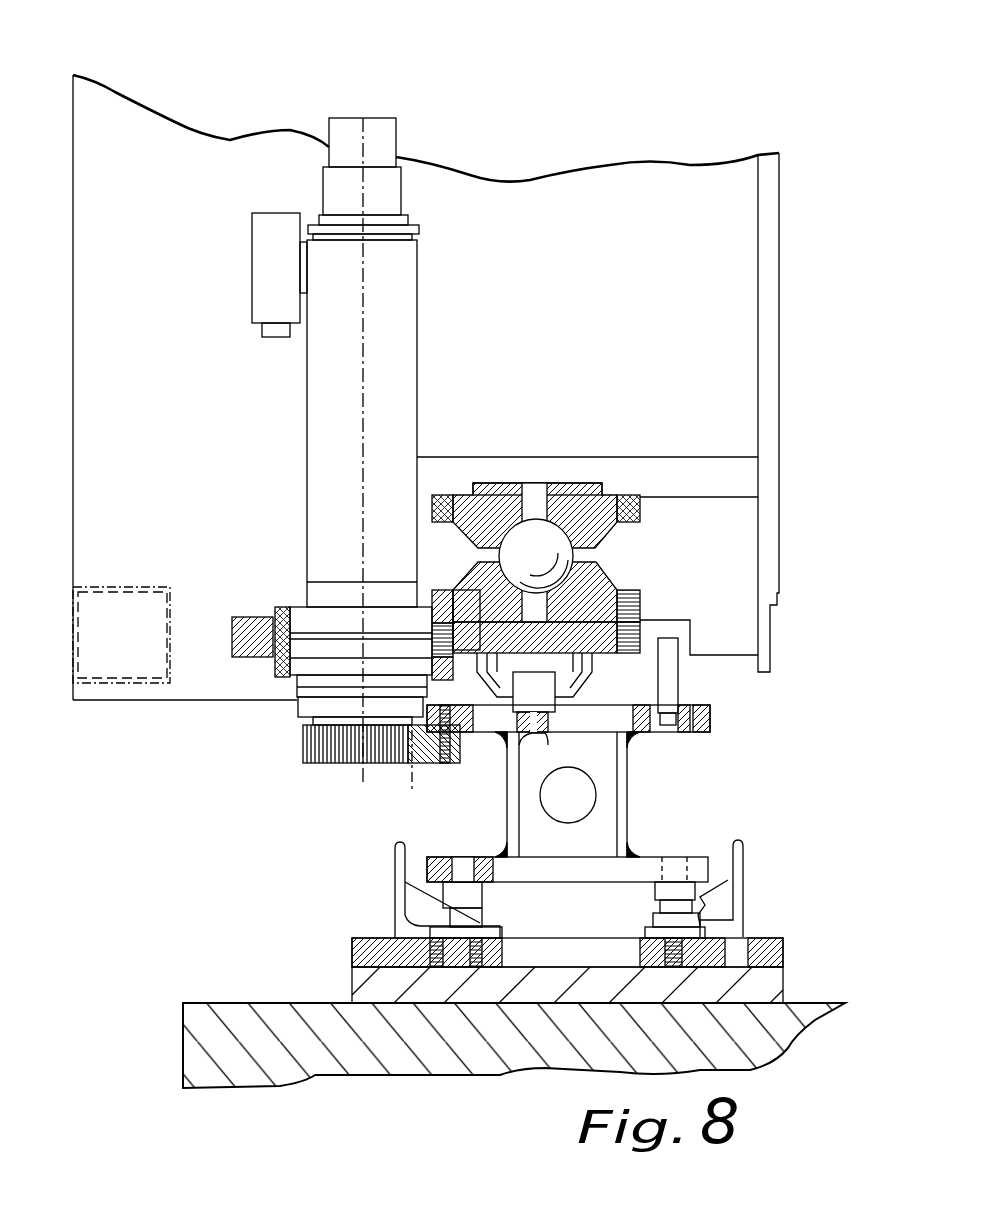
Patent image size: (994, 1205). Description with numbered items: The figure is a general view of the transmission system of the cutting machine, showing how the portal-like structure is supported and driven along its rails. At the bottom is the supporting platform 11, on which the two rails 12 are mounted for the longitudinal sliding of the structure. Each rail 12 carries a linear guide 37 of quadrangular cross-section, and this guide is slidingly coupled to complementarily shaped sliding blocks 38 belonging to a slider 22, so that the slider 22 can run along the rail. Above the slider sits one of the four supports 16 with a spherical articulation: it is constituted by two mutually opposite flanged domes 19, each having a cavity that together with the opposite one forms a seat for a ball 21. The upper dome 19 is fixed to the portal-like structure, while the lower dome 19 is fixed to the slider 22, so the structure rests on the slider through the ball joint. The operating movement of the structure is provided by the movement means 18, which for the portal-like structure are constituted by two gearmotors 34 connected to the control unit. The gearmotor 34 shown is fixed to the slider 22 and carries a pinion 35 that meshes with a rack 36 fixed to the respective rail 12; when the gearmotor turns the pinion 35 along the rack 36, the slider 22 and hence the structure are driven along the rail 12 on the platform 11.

The supporting platform 11 is at (232, 1008).
The rail 12 is at (437, 810).
The support 16 is at (603, 548).
The means for the operating movement 18 is at (245, 385).
The flanged dome 19 is at (578, 496).
The ball 21 is at (535, 540).
The slider 22 is at (603, 657).
The gearmotor 34 is at (418, 318).
The pinion 35 is at (300, 733).
The rack 36 is at (448, 767).
The linear guide 37 is at (535, 692).
The sliding block 38 is at (563, 687).